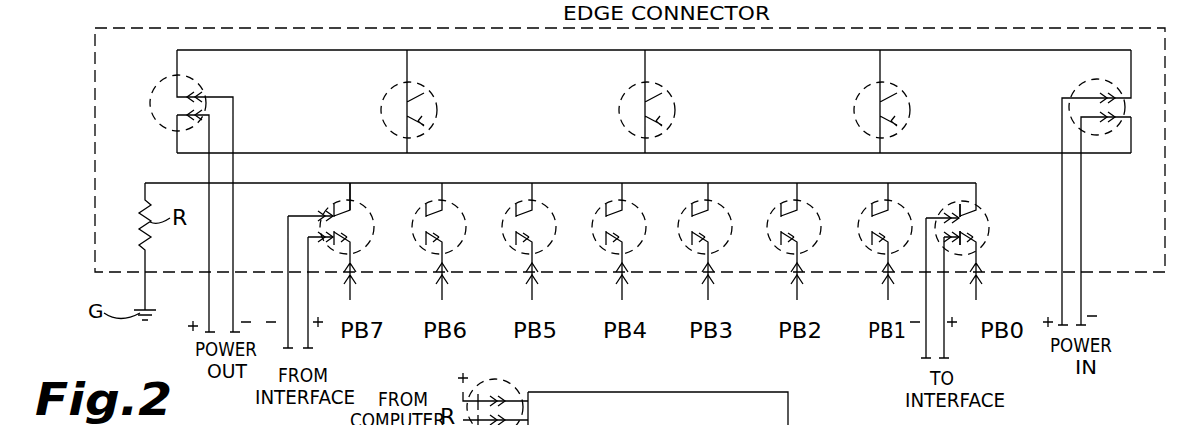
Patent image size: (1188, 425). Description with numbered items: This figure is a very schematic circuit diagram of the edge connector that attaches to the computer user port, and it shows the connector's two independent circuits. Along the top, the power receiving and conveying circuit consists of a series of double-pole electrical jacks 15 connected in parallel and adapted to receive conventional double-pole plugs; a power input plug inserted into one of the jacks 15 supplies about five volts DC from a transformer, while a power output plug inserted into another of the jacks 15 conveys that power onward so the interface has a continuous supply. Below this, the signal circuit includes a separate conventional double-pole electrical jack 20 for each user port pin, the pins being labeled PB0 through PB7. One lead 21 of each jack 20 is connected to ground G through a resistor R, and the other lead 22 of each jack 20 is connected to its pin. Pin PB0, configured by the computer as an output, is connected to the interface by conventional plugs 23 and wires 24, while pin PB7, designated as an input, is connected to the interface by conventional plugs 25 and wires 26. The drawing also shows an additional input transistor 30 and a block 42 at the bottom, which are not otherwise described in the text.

The double-pole electrical jacks 15 is at (205, 78).
The double-pole electrical jack 20 is at (372, 222).
The lead 21 is at (440, 192).
The lead 22 is at (364, 247).
The plugs 23 is at (985, 230).
The wires 24 is at (925, 358).
The plugs 25 is at (328, 217).
The wires 26 is at (288, 348).
The input transistor 30 is at (505, 384).
The computer interface block 42 is at (788, 410).